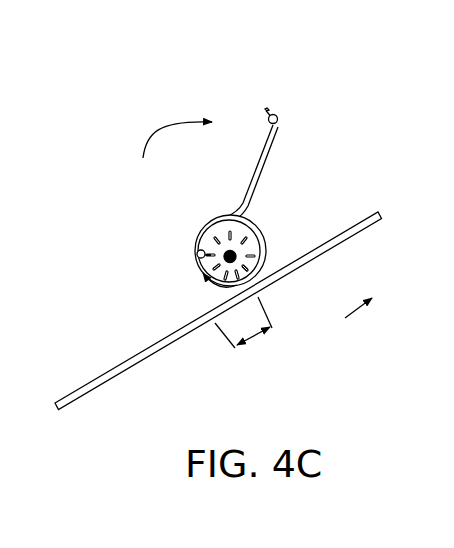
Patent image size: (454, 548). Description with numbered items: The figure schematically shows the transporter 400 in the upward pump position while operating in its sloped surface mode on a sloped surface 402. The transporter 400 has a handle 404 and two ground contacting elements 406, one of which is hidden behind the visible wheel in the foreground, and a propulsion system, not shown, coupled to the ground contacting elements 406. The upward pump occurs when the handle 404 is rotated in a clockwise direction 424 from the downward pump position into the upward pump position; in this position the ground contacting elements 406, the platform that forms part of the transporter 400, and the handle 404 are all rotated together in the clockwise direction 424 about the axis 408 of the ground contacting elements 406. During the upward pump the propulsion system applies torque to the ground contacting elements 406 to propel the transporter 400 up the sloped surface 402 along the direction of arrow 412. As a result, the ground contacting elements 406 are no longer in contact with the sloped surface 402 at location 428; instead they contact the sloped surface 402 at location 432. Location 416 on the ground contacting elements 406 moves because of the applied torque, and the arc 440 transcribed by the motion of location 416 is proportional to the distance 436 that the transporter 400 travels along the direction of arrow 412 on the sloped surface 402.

The transporter 400 is at (318, 119).
The sloped surface 402 is at (70, 411).
The handle 404 is at (272, 165).
The ground contacting element 406 is at (200, 236).
The axis 408 is at (235, 249).
The arrow 412 is at (381, 298).
The location on the ground contacting elements 416 is at (196, 255).
The clockwise direction 424 is at (170, 121).
The location on the sloped surface 428 is at (192, 339).
The location on the sloped surface 432 is at (259, 291).
The distance 436 is at (251, 330).
The arc 440 is at (212, 290).